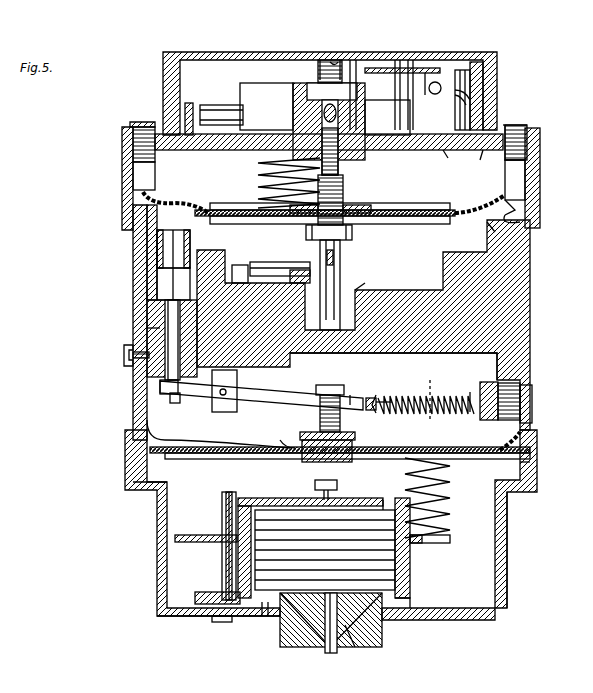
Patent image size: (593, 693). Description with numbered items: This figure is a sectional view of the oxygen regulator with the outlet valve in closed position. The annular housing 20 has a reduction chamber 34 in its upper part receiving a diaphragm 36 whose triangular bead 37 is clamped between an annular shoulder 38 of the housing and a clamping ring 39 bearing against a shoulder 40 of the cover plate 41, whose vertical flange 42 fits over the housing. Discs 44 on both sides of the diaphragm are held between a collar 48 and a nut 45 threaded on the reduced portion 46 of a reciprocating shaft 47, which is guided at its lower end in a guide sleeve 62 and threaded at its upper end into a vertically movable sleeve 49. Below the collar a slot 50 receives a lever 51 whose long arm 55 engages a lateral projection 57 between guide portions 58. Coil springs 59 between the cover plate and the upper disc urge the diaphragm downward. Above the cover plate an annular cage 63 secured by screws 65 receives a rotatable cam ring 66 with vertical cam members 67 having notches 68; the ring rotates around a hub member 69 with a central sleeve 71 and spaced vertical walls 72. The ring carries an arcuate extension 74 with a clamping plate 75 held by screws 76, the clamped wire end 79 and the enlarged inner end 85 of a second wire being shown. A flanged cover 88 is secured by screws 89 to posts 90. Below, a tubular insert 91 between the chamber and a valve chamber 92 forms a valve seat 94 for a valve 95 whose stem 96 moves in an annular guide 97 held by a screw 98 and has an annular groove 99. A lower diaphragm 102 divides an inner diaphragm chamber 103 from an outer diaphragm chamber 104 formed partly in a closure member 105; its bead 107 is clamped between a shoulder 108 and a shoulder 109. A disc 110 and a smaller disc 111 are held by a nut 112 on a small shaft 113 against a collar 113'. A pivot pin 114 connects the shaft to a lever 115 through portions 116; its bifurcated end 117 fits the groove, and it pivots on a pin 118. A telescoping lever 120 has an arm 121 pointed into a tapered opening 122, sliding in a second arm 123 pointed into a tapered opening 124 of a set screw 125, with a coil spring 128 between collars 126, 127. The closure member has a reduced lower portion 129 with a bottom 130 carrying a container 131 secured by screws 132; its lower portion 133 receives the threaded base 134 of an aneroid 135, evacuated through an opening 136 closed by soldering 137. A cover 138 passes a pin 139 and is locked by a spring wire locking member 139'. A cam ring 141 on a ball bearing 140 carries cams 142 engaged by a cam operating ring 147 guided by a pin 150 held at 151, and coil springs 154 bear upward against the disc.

The annular housing 20 is at (530, 300).
The reduction chamber 34 is at (495, 232).
The diaphragm 36 is at (480, 195).
The bead 37 is at (515, 200).
The annular shoulder 38 is at (520, 212).
The clamping ring 39 is at (540, 158).
The shoulder 40 is at (527, 138).
The cover plate 41 is at (485, 162).
The vertical flange 42 is at (525, 178).
The discs 44 is at (418, 203).
The nut 45 is at (371, 208).
The reduced portion 46 is at (343, 190).
The reciprocating metal shaft 47 is at (334, 275).
The collar 48 is at (352, 232).
The vertically movable metal sleeve 49 is at (215, 108).
The slot 50 is at (340, 255).
The lever 51 is at (333, 255).
The long arm 55 is at (270, 262).
The lateral projection 57 is at (300, 270).
The guide portions 58 is at (240, 265).
The coil springs 59 is at (258, 170).
The guide sleeve 62 is at (358, 290).
The annular cage 63 is at (497, 88).
The screws 65 is at (515, 125).
The rotatable cam ring 66 is at (451, 160).
The cam members 67 is at (470, 105).
The notches 68 is at (476, 62).
The hub member 69 is at (400, 110).
The central sleeve 71 is at (385, 150).
The vertical walls 72 is at (270, 83).
The arcuate extension 74 is at (353, 62).
The clamping plate 75 is at (395, 68).
The screws 76 is at (392, 84).
The wire end 79 is at (425, 73).
The enlarged inner end 85 is at (465, 92).
The flanged cover 88 is at (438, 82).
The screws 89 is at (325, 60).
The posts 90 is at (318, 72).
The tubular metal insert 91 is at (190, 240).
The valve chamber 92 is at (157, 287).
The valve seat 94 is at (173, 240).
The valve 95 is at (157, 290).
The stem 96 is at (168, 370).
The annular guide 97 is at (147, 328).
The screw 98 is at (124, 358).
The annular groove 99 is at (160, 390).
The diaphragm 102 is at (230, 440).
The inner diaphragm chamber 103 is at (155, 420).
The outer diaphragm chamber 104 is at (157, 482).
The closure member 105 is at (537, 456).
The bead 107 is at (528, 432).
The shoulder 108 is at (532, 408).
The shoulder 109 is at (520, 462).
The disc 110 is at (235, 459).
The smaller disc 111 is at (280, 440).
The nut 112 is at (310, 460).
The reciprocating metal shaft 113 is at (347, 413).
The collar 113' is at (323, 426).
The pivot pin 114 is at (330, 388).
The lever 115 is at (258, 395).
The portions 116 is at (350, 398).
The bifurcated end 117 is at (175, 403).
The pin 118 is at (220, 395).
The spring pressed telescoping metal lever 120 is at (420, 397).
The arm 121 is at (378, 395).
The tapered opening 122 is at (370, 410).
The second arm 123 is at (475, 412).
The tapered opening 124 is at (478, 358).
The set screw 125 is at (520, 385).
The collar 126 is at (385, 410).
The collar 127 is at (480, 410).
The coil spring 128 is at (418, 416).
The reduced lower portion 129 is at (507, 570).
The bottom 130 is at (175, 616).
The container 131 is at (255, 573).
The screws 132 is at (265, 616).
The lower portion 133 is at (290, 647).
The threaded base 134 is at (312, 647).
The aneroid 135 is at (383, 510).
The opening 136 is at (355, 647).
The solder closure 137 is at (330, 640).
The cover 138 is at (270, 498).
The pin 139 is at (279, 540).
The spring wire locking member 139' is at (451, 525).
The ball bearing 140 is at (405, 610).
The cam ring 141 is at (205, 604).
The cams 142 is at (238, 545).
The cam operating ring 147 is at (190, 535).
The guide pin 150 is at (226, 498).
The pin mounting 151 is at (222, 622).
The coil springs 154 is at (450, 480).